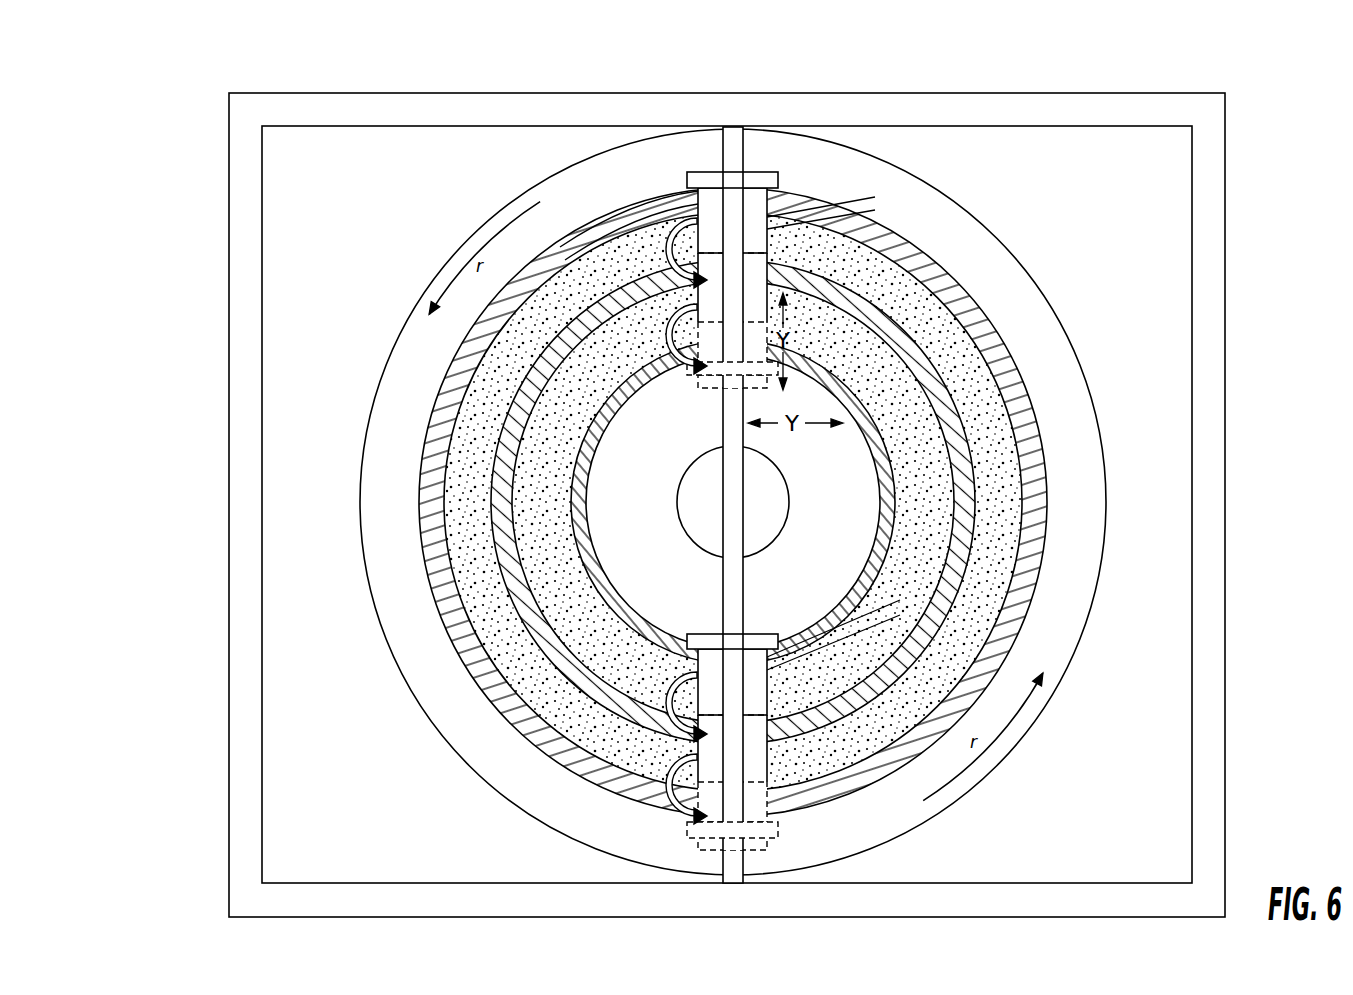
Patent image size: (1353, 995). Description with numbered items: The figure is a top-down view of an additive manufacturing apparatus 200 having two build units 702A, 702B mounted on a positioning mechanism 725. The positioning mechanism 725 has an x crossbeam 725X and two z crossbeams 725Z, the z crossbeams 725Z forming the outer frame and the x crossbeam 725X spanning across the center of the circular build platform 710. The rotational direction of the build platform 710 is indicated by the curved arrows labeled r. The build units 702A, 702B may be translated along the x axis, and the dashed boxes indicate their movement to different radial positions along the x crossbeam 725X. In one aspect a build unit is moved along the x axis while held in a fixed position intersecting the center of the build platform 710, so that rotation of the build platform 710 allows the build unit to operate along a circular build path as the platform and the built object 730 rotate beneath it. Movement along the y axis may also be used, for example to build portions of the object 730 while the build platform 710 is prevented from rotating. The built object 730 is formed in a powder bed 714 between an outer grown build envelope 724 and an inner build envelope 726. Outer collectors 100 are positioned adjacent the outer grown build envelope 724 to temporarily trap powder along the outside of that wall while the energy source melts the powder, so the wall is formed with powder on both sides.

The rotary separator system 200 is at (127, 136).
The outer collectors 100 is at (755, 185).
The build unit 702A is at (768, 215).
The build unit 702B is at (752, 662).
The build platform 710 is at (412, 653).
The powder bed 714 is at (917, 588).
The outer grown build envelope 724 is at (910, 243).
The positioning mechanism 725 is at (1106, 95).
The x crossbeam 725X is at (725, 148).
The z crossbeams 725Z is at (344, 110).
The inner build envelope 726 is at (880, 493).
The built object 730 is at (960, 452).